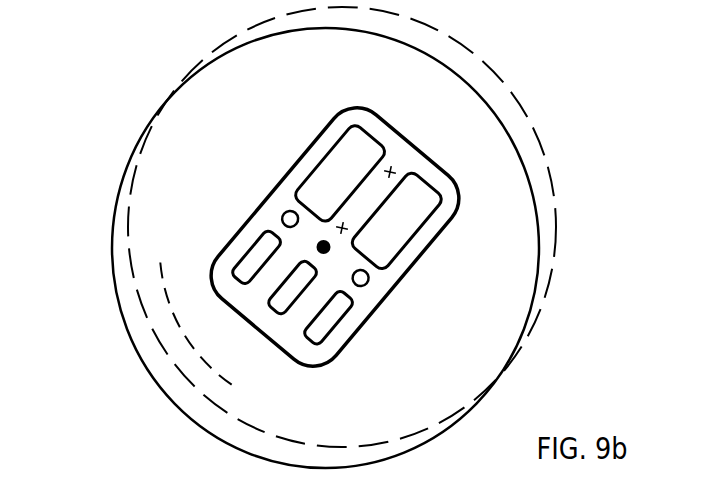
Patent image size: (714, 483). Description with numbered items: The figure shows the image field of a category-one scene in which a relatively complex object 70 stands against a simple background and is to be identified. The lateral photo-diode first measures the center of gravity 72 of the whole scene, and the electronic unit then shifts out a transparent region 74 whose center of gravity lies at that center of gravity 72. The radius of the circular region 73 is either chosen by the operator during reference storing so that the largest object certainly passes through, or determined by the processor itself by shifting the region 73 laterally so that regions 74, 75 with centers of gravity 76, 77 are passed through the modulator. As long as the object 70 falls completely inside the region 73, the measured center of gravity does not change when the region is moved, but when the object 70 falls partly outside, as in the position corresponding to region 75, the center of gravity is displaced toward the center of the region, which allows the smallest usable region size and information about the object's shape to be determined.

The object 70 is at (407, 148).
The center of gravity 72 is at (324, 247).
The circular region 73 is at (110, 242).
The transparent region 74 is at (137, 282).
The region 75 is at (183, 335).
The center of gravity 76 is at (342, 228).
The center of gravity 77 is at (390, 172).